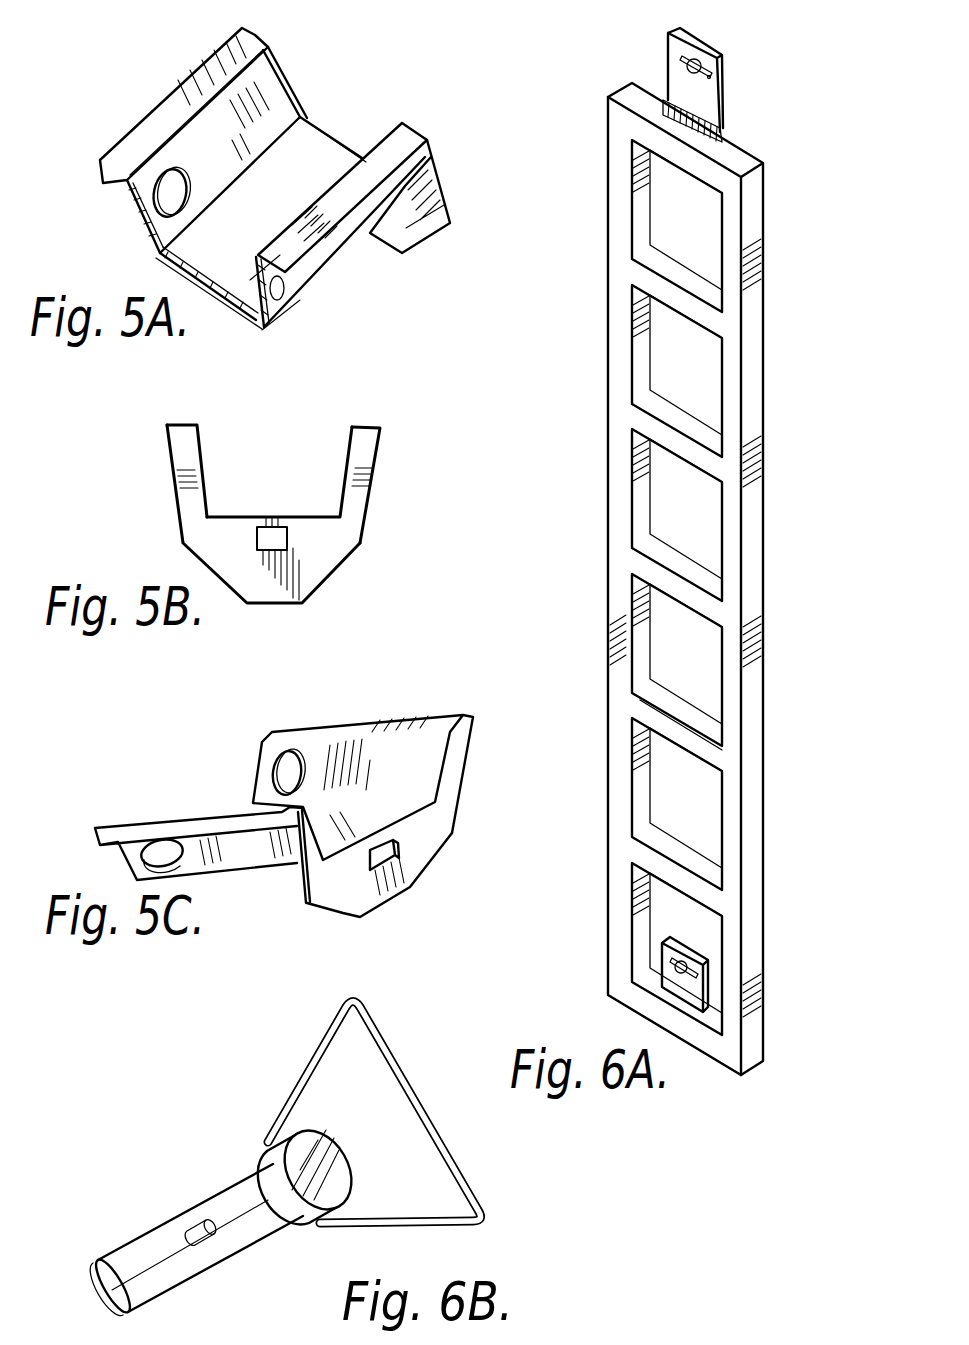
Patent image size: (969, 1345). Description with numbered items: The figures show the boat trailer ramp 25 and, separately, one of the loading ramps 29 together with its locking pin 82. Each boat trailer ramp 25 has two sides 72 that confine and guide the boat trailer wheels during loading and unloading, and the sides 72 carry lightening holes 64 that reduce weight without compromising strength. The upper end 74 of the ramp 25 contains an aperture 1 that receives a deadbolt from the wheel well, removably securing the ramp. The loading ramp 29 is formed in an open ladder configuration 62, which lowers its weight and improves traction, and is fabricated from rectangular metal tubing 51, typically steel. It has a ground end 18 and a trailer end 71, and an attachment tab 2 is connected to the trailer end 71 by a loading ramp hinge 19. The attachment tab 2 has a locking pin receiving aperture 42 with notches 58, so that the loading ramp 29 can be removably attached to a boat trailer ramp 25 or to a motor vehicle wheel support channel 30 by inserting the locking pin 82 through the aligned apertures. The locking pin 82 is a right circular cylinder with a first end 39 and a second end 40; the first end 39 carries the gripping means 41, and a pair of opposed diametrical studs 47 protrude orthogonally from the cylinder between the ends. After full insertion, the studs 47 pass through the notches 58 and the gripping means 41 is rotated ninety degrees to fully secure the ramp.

In FIG. 5B, the aperture 1 is at (258, 535).
In FIG. 5C, the aperture 1 is at (390, 860).
In FIG. 6A, the attachment tab 2 is at (672, 33).
In FIG. 6A, the ground end 18 is at (713, 1058).
In FIG. 6A, the loading ramp hinge 19 is at (725, 133).
In FIG. 5A, the boat trailer ramp 25 is at (290, 179).
In FIG. 5B, the boat trailer ramp 25 is at (268, 514).
In FIG. 5C, the boat trailer ramp 25 is at (309, 809).
In FIG. 6A, the loading ramp 29 is at (745, 538).
In FIG. 6B, the motor vehicle wheel support channel 30 is at (169, 1240).
In FIG. 6B, the first end 39 is at (268, 1163).
In FIG. 6B, the second end 40 is at (103, 1298).
In FIG. 6B, the locking pin gripping means 41 is at (403, 1046).
In FIG. 6A, the locking pin receiving aperture 42 is at (668, 506).
In FIG. 6B, the diametrical stud 47 is at (197, 1220).
In FIG. 6A, the rectangular metal tubing 51 is at (698, 747).
In FIG. 6A, the notch 58 is at (680, 58).
In FIG. 6A, the open ladder configuration 62 is at (712, 398).
In FIG. 5A, the lightening hole 64 is at (163, 198).
In FIG. 5C, the lightening hole 64 is at (290, 775).
In FIG. 6A, the trailer end 71 is at (669, 567).
In FIG. 5A, the side 72 is at (265, 88).
In FIG. 5B, the side 72 is at (180, 441).
In FIG. 5C, the side 72 is at (430, 767).
In FIG. 5A, the upper end 74 is at (440, 190).
In FIG. 5B, the upper end 74 is at (372, 492).
In FIG. 5C, the upper end 74 is at (457, 820).
In FIG. 6B, the locking pin 82 is at (258, 1159).